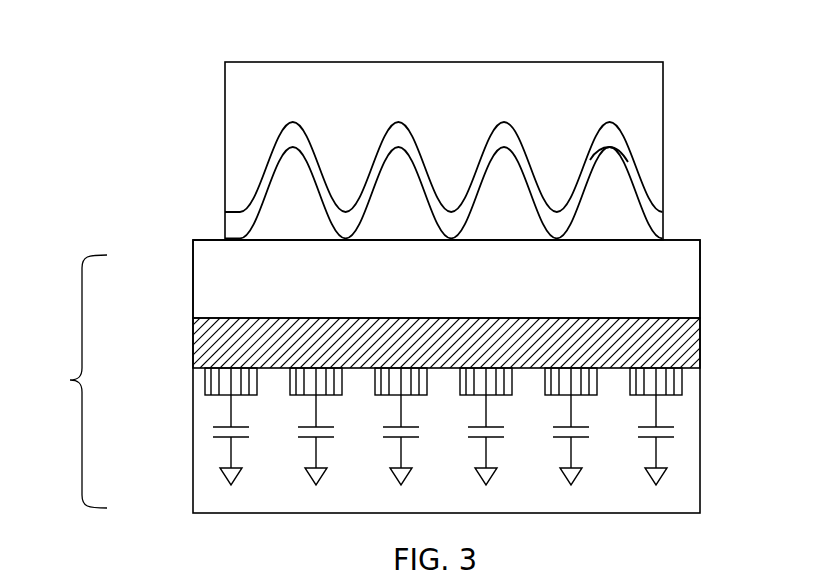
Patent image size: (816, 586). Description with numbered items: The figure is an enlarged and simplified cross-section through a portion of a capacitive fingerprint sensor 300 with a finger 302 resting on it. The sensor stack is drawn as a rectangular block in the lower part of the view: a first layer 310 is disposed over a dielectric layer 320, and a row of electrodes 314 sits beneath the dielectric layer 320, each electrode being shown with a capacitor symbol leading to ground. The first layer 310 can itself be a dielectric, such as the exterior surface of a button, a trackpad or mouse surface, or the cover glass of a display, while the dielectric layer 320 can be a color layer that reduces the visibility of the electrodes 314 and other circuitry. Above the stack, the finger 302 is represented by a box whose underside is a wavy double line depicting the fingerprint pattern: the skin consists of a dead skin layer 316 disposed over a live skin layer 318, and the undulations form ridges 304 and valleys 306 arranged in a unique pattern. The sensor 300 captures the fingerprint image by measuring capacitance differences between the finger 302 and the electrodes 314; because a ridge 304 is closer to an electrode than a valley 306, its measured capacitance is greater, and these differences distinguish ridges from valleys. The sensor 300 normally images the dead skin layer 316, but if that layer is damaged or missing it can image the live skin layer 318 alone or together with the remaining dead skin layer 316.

The capacitive fingerprint sensor 300 is at (70, 380).
The finger 302 is at (266, 83).
The ridge 304 is at (218, 237).
The valley 306 is at (624, 149).
The first layer 310 is at (700, 277).
The electrodes 314 is at (205, 385).
The dead skin layer 316 is at (250, 222).
The live skin layer 318 is at (298, 132).
The dielectric layer 320 is at (700, 340).